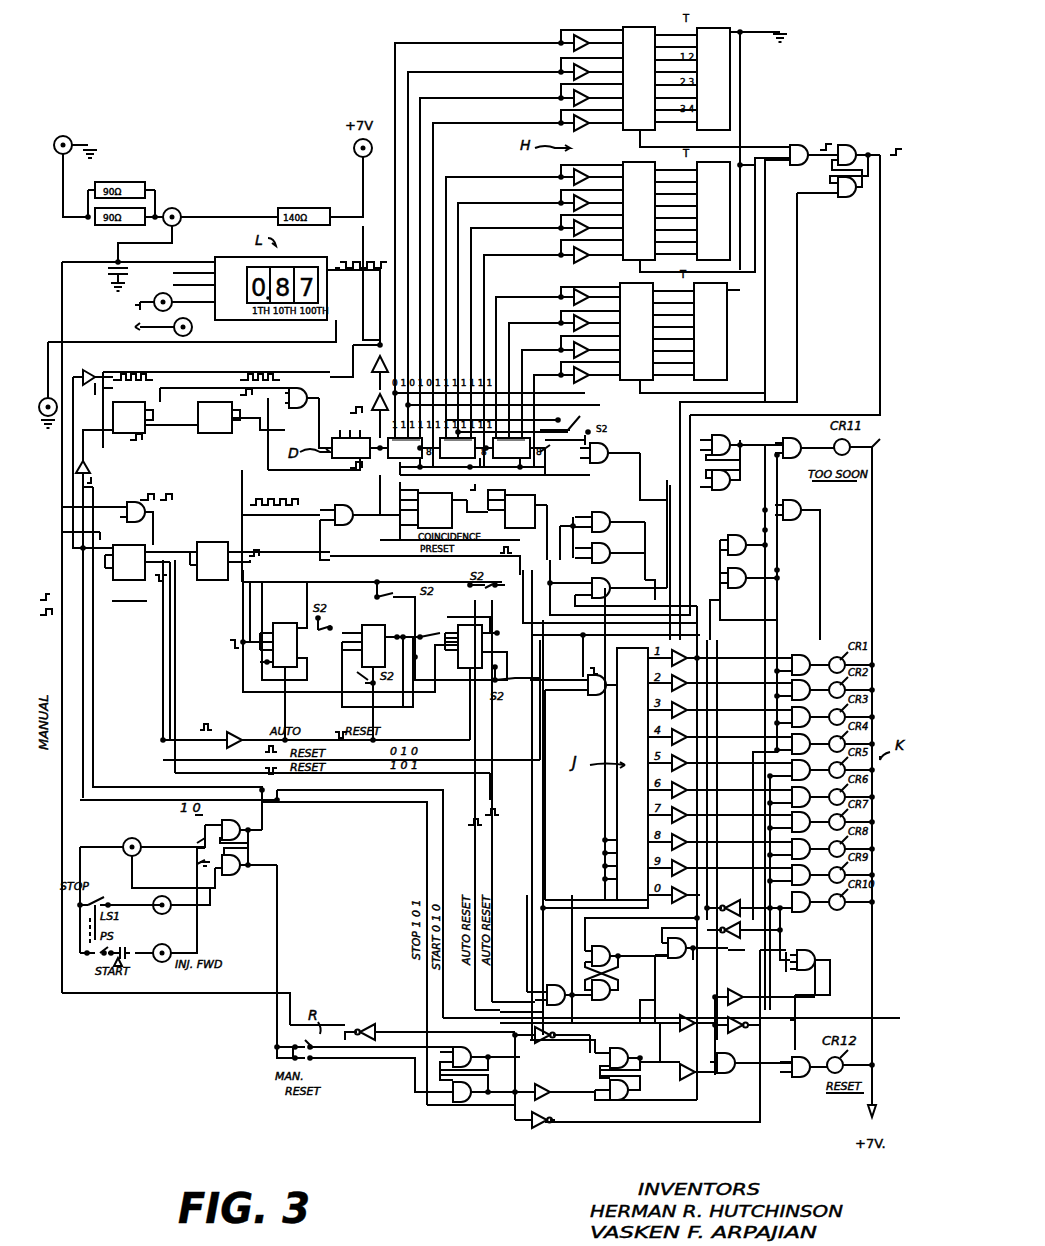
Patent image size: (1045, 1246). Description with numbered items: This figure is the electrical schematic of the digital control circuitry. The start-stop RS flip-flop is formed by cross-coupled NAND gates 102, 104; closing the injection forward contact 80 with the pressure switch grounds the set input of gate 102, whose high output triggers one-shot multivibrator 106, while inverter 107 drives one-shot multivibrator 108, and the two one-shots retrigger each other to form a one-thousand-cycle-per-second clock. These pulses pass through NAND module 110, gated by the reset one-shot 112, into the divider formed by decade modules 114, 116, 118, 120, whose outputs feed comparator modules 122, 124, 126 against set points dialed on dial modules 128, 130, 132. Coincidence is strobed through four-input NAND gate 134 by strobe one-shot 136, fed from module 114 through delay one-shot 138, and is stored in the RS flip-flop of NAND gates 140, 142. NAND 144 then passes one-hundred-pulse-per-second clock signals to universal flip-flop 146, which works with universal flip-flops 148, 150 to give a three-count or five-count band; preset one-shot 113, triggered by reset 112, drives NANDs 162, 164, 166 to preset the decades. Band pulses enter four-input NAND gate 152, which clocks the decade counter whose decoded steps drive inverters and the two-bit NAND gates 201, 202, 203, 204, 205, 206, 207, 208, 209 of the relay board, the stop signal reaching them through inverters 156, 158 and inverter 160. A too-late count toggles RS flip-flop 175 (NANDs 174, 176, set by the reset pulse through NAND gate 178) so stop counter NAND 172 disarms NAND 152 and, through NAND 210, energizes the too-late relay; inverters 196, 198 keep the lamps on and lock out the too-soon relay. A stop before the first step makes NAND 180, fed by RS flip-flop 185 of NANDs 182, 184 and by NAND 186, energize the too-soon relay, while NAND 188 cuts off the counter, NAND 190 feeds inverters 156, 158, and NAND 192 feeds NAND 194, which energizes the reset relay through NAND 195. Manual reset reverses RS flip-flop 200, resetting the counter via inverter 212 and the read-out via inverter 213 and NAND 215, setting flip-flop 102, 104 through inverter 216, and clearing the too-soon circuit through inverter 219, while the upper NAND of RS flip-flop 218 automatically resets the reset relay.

The injection forward switch 80 is at (150, 950).
The NAND gate 102 is at (243, 808).
The NAND gate 104 is at (238, 872).
The one shot multivibrator 106 is at (219, 430).
The inverter 107 is at (90, 466).
The one shot multivibrator 108 is at (133, 417).
The NAND module 110 is at (300, 415).
The one shot reset multivibrator 112 is at (126, 573).
The one shot preset multivibrator 113 is at (205, 571).
The divider module 114 is at (360, 444).
The divider decade module 116 is at (405, 458).
The divider decade module 118 is at (455, 458).
The divider decade module 120 is at (515, 458).
The comparator module 122 is at (630, 28).
The comparator module 124 is at (630, 158).
The comparator module 126 is at (630, 280).
The dial module 128 is at (730, 32).
The dial module 130 is at (700, 262).
The dial module 132 is at (722, 295).
The four-input NAND gate 134 is at (808, 130).
The one shot strobe multivibrator 136 is at (517, 509).
The one shot multivibrator 138 is at (433, 509).
The NAND gate 140 is at (850, 140).
The NAND gate 142 is at (848, 200).
The two-input NAND 144 is at (349, 526).
The universal flip flop 146 is at (292, 620).
The universal flip flop 148 is at (380, 620).
The universal flip flop 150 is at (474, 622).
The four-input NAND gate 152 is at (598, 697).
The inverter 156 is at (744, 977).
The inverter 158 is at (738, 1035).
The inverter 160 is at (696, 1005).
The two-input NAND 162 is at (600, 510).
The two-input NAND 164 is at (602, 545).
The two-input NAND 166 is at (588, 450).
The two-input NAND 172 is at (680, 962).
The NAND gate 174 is at (611, 934).
The RS flip flop 175 is at (640, 966).
The NAND gate 176 is at (603, 1002).
The four-input NAND gate 178 is at (566, 973).
The NAND gate 180 is at (803, 425).
The NAND gate 182 is at (720, 430).
The NAND gate 184 is at (726, 492).
The RS flip flop 185 is at (745, 466).
The NAND gate 186 is at (610, 570).
The stop counter NAND 188 is at (795, 498).
The NAND gate 190 is at (746, 520).
The NAND gate 192 is at (736, 590).
The NAND gate 194 is at (727, 1075).
The NAND gate 195 is at (800, 1079).
The inverter 196 is at (740, 898).
The inverter 198 is at (738, 920).
The RS flip flop 200 is at (475, 1075).
The two-bit NAND gate 201 is at (803, 653).
The two-bit NAND gate 202 is at (803, 678).
The two-bit NAND gate 203 is at (803, 705).
The two-bit NAND gate 204 is at (803, 732).
The two-bit NAND gate 205 is at (803, 758).
The two-bit NAND gate 206 is at (803, 785).
The two-bit NAND gate 207 is at (803, 810).
The two-bit NAND gate 208 is at (803, 837).
The two-bit NAND gate 209 is at (803, 863).
The NAND gate 210 is at (803, 890).
The inverter 212 is at (545, 1082).
The inverter 213 is at (368, 1022).
The NAND gate 215 is at (126, 523).
The inverter 216 is at (545, 1045).
The RS flip flop 218 is at (645, 1075).
The inverter 219 is at (551, 1138).